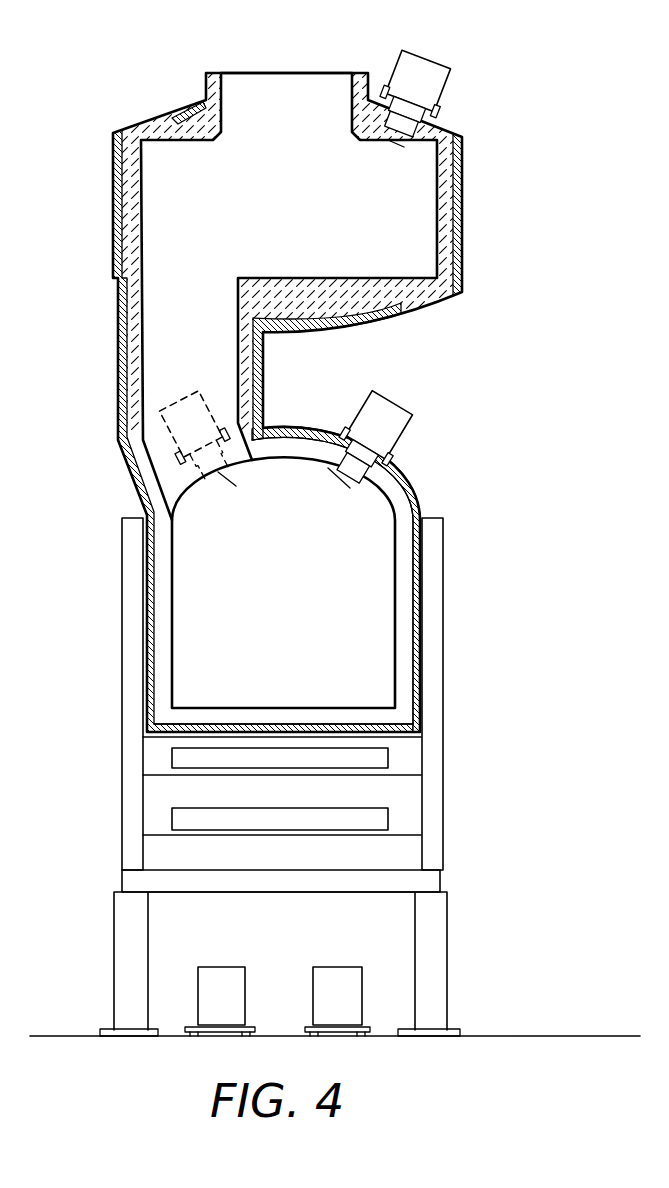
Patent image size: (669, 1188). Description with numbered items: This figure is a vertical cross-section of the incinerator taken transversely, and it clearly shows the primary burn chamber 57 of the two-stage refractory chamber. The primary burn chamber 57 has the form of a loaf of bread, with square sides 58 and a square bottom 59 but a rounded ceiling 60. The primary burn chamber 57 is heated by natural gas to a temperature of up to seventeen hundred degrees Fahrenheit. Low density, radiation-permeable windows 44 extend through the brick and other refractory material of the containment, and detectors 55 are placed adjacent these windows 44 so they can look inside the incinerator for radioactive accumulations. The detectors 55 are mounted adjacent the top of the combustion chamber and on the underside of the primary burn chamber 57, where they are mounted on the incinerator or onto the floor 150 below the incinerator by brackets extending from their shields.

The low density window 44 is at (396, 144).
The detector 55 is at (420, 57).
The primary burn chamber 57 is at (297, 570).
The square sides 58 is at (174, 628).
The bottom 59 is at (270, 708).
The rounded ceiling 60 is at (308, 460).
The floor 150 is at (288, 1030).